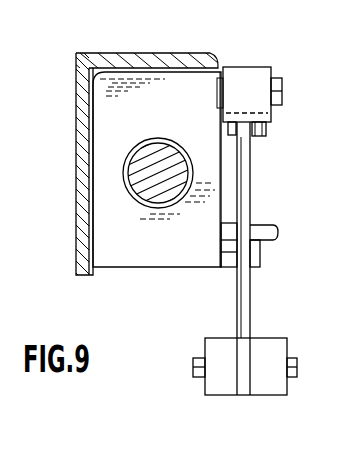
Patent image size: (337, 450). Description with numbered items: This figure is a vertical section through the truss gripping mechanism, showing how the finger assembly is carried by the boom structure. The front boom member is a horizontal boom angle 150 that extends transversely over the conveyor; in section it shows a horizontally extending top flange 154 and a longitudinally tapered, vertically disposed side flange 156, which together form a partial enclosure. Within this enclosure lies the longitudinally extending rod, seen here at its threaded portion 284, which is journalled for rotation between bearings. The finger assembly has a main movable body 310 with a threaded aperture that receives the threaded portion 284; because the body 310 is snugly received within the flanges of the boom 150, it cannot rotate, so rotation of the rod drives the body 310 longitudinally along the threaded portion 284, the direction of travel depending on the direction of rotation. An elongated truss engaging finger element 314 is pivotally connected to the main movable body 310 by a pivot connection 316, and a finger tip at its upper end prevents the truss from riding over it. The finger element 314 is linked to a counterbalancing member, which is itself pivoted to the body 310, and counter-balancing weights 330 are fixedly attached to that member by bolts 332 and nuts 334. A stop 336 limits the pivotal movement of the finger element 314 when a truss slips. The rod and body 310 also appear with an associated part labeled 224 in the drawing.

The horizontal boom angle 150 is at (83, 48).
The top flange 154 is at (177, 50).
The side flange 156 is at (77, 189).
The main movable body 310 is at (164, 120).
The threaded portion 284 is at (155, 192).
The elongated truss engaging finger element 314 is at (247, 67).
The pivot connection 316 is at (282, 84).
The support rod 224 is at (336, 178).
The stop 336 is at (277, 227).
The counter-balancing weights 330 is at (257, 396).
The nuts 334 is at (204, 352).
The bolts 332 is at (289, 352).